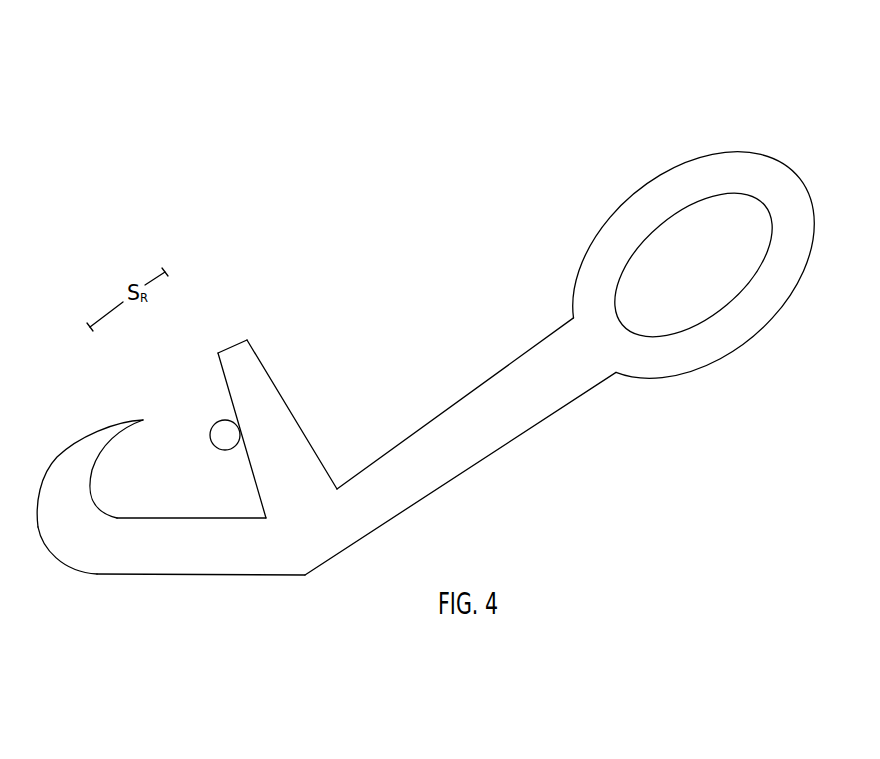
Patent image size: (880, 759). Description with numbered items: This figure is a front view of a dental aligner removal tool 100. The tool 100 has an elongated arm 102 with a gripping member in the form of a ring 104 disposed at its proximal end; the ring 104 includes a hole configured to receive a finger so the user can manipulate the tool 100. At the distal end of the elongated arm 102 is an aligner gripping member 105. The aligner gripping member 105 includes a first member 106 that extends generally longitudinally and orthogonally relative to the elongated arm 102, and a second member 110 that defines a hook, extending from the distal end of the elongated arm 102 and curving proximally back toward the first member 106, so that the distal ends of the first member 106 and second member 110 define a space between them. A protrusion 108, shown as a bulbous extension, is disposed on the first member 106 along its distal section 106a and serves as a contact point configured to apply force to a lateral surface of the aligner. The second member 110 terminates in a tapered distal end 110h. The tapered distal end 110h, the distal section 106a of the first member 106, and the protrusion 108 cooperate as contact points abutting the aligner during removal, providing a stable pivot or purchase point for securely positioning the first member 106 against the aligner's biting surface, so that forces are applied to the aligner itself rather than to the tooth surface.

The dental aligner removal tool 100 is at (543, 117).
The elongated arm 102 is at (435, 440).
The ring 104 is at (733, 152).
The aligner gripping member 105 is at (103, 598).
The first member 106 is at (277, 387).
The distal section of the first member 106a is at (250, 363).
The protrusion 108 is at (214, 424).
The second member 110 is at (190, 557).
The tapered distal end 110h is at (113, 420).